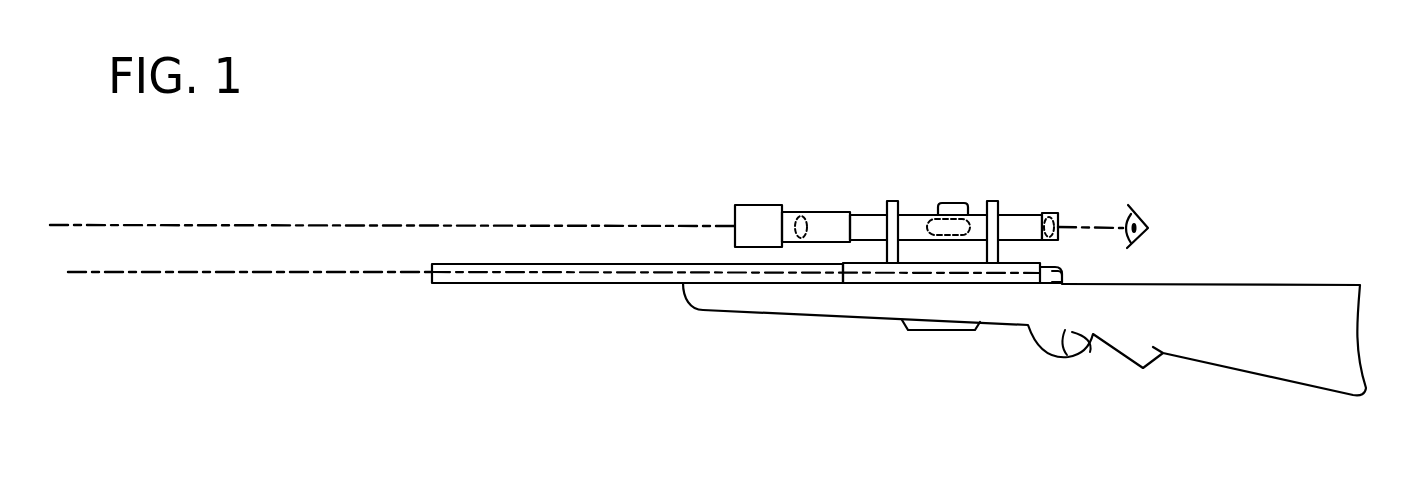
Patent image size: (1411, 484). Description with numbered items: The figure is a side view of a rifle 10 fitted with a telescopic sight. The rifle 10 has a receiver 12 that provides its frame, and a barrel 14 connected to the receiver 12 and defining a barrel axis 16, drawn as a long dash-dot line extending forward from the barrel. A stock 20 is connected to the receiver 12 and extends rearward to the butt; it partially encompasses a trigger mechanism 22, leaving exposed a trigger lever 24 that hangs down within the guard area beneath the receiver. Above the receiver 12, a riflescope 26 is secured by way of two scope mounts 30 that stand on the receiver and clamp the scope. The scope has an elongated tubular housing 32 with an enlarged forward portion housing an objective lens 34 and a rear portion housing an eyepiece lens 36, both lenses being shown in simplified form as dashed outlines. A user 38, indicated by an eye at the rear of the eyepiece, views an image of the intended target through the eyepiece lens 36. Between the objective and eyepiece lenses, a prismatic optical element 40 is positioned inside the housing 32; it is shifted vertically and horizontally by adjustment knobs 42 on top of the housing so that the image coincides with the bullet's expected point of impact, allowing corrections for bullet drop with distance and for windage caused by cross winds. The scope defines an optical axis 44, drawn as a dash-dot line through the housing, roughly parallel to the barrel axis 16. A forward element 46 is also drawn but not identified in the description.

The rifle 10 is at (650, 377).
The receiver 12 is at (1033, 262).
The barrel 14 is at (552, 283).
The barrel axis 16 is at (287, 272).
The stock 20 is at (1328, 285).
The trigger mechanism 22 is at (1024, 354).
The trigger lever 24 is at (1089, 350).
The riflescope 26 is at (897, 190).
The scope mounts 30 is at (893, 201).
The tubular housing 32 is at (830, 210).
The objective lens 34 is at (803, 217).
The eyepiece lens 36 is at (1042, 223).
The user 38 is at (1140, 203).
The prismatic optical element 40 is at (947, 227).
The adjustment knobs 42 is at (938, 207).
The optical axis 44 is at (488, 225).
The front housing 46 is at (748, 205).